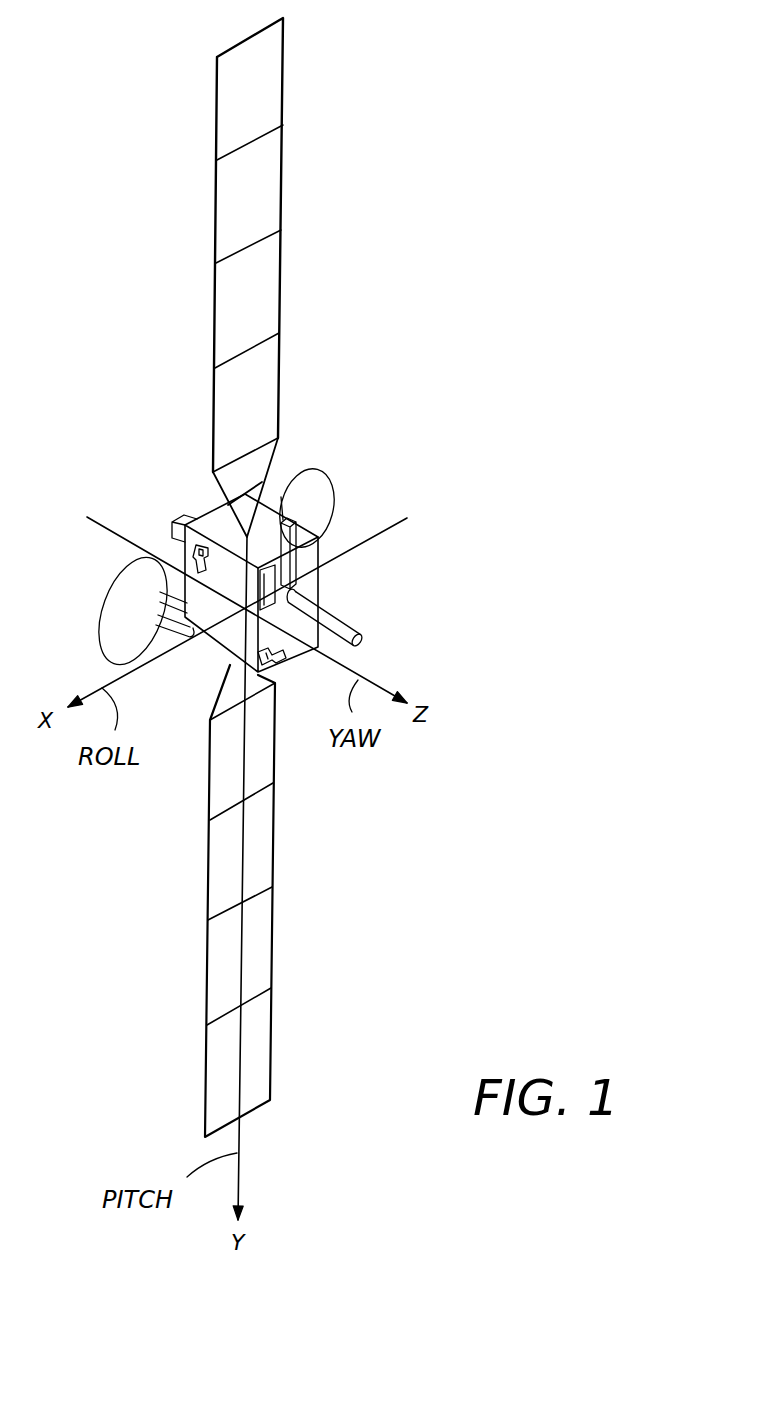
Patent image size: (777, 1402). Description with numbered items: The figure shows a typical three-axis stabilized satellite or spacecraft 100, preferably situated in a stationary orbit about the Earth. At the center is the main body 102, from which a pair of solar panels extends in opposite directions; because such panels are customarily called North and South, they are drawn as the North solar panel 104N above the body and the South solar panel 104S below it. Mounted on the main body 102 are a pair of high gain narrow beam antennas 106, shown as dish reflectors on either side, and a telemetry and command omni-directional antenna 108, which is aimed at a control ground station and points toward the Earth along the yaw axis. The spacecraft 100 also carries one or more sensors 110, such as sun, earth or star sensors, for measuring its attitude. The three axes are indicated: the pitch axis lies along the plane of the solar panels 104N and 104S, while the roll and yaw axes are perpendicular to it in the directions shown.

The spacecraft 100 is at (358, 235).
The main body 102 is at (310, 587).
The North solar panel 104N is at (262, 187).
The South solar panel 104S is at (263, 943).
The high gain narrow beam antenna 106 is at (322, 480).
The telemetry and command omni-directional antenna 108 is at (352, 623).
The sensor 110 is at (197, 543).